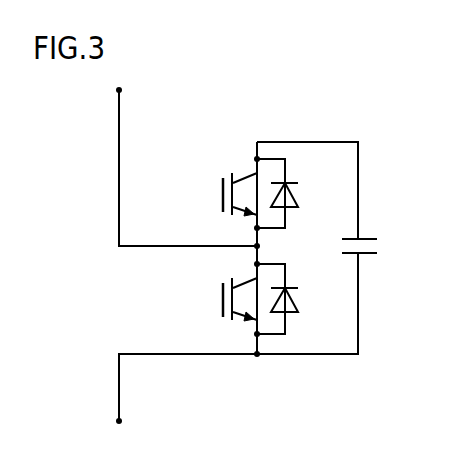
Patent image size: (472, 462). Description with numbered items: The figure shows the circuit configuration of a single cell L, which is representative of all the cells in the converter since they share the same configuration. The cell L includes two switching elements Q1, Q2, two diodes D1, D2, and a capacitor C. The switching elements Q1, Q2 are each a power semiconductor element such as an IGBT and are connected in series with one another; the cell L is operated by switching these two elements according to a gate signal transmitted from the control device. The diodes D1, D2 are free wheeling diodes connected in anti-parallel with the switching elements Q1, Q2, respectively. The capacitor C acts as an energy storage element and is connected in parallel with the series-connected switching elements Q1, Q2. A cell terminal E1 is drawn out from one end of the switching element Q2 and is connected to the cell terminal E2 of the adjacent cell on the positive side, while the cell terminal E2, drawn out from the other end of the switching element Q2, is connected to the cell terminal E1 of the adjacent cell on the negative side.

The cell terminal E1 is at (116, 91).
The cell terminal E2 is at (113, 424).
The switching element Q1 is at (225, 177).
The switching element Q2 is at (225, 281).
The diode D1 is at (297, 196).
The diode D2 is at (297, 300).
The capacitor C is at (370, 238).
The cell L is at (378, 128).